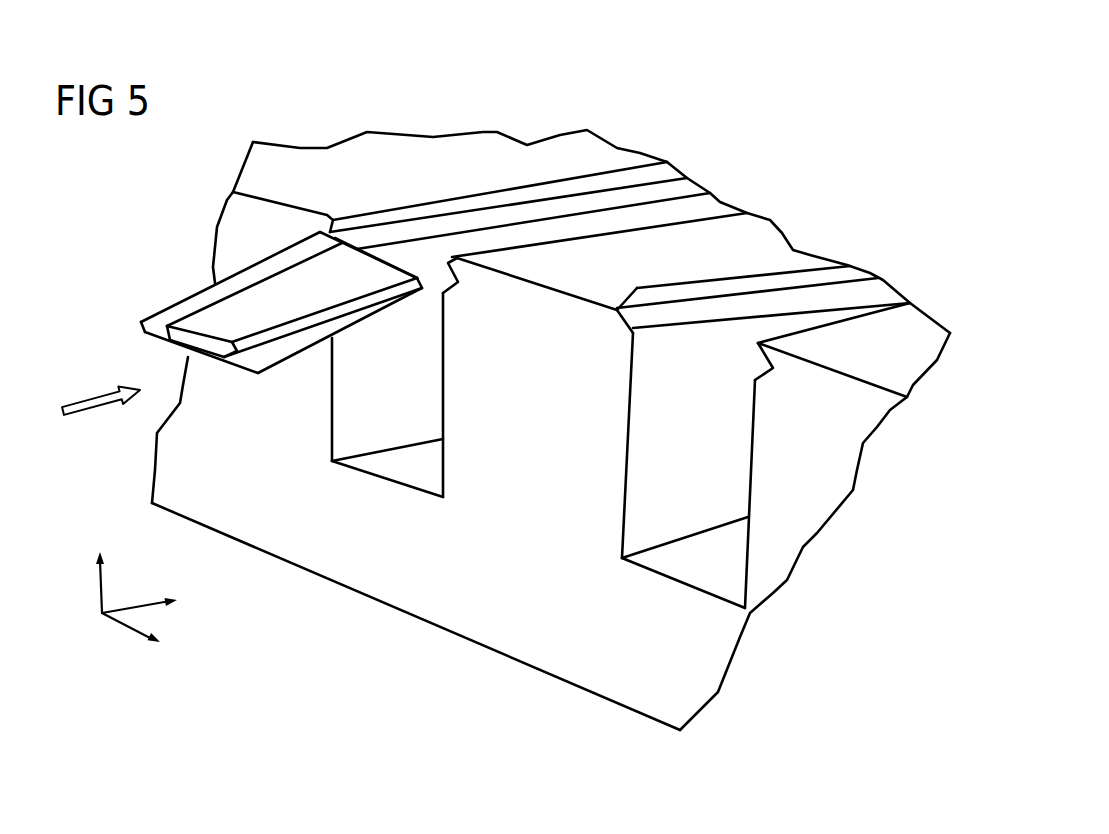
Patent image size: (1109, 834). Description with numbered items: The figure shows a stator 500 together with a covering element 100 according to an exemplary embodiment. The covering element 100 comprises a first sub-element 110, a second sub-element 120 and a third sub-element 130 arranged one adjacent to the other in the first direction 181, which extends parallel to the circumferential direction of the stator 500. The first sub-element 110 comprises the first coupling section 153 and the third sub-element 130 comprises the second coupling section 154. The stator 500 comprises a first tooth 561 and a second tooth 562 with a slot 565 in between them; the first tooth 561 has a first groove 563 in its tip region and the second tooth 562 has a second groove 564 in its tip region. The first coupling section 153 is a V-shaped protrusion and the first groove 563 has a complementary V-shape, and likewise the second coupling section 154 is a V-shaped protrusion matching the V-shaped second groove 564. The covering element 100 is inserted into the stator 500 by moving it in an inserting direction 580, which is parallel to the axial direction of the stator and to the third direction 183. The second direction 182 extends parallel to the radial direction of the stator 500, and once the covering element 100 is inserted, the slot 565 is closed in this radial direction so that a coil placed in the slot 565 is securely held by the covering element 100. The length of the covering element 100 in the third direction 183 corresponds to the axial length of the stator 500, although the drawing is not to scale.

The covering element 100 is at (240, 330).
The first sub-element 110 is at (152, 340).
The second sub-element 120 is at (205, 363).
The third sub-element 130 is at (258, 374).
The first coupling section 153 is at (148, 333).
The second coupling section 154 is at (275, 360).
The first direction 181 is at (118, 627).
The second direction 182 is at (96, 598).
The third direction 183 is at (137, 600).
The stator 500 is at (551, 434).
The first tooth 561 is at (493, 344).
The second tooth 562 is at (542, 465).
The first groove 563 is at (380, 214).
The second groove 564 is at (443, 275).
The slot 565 is at (403, 455).
The inserting direction 580 is at (78, 415).